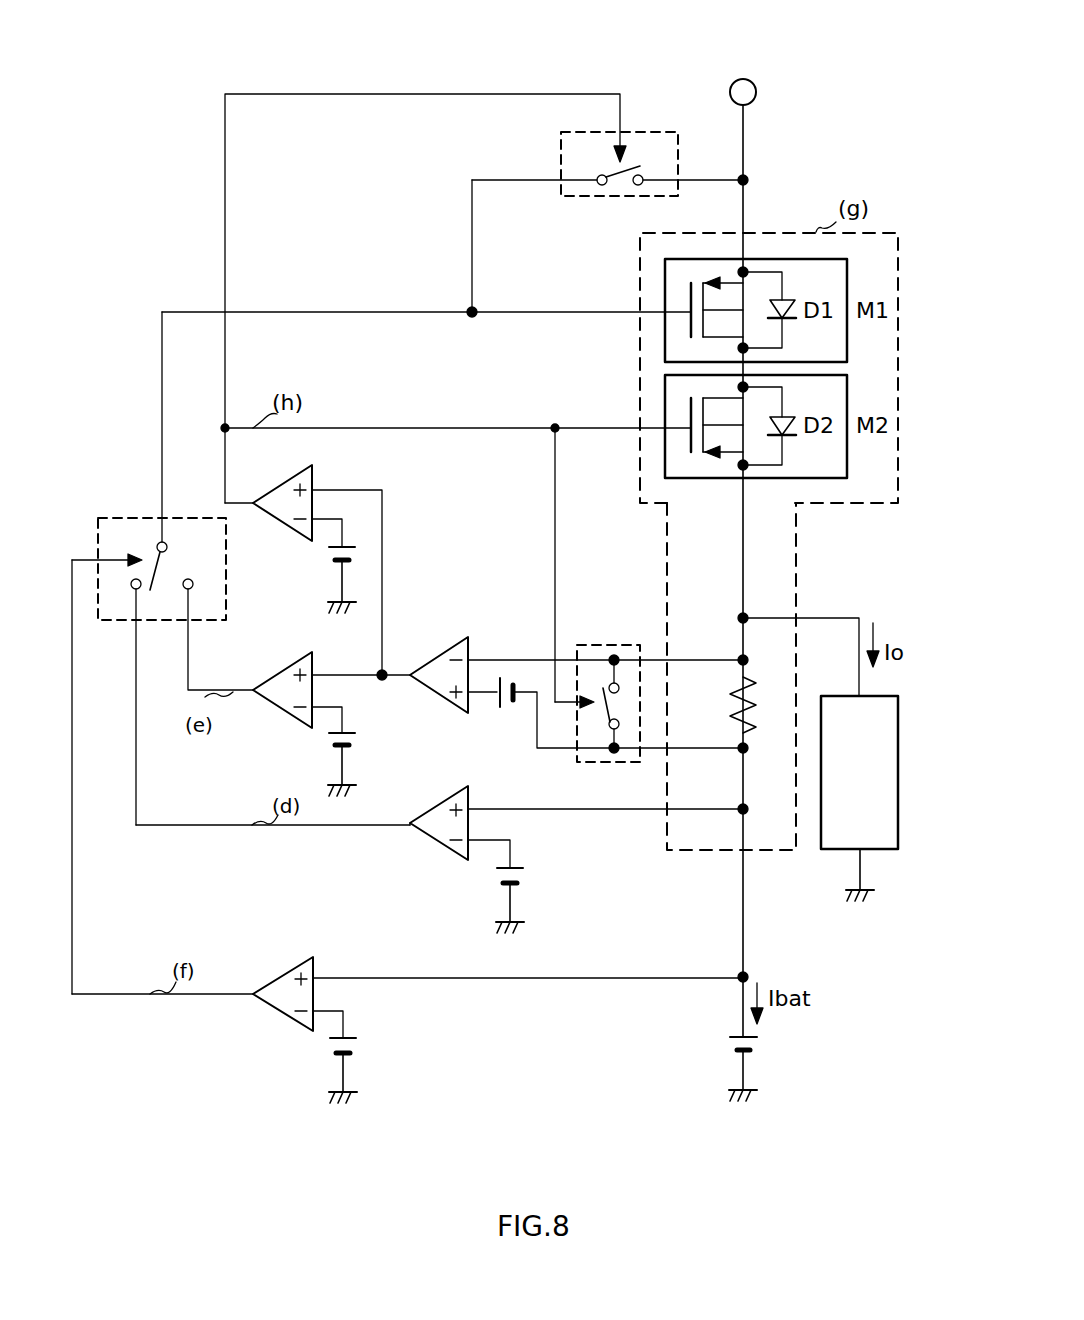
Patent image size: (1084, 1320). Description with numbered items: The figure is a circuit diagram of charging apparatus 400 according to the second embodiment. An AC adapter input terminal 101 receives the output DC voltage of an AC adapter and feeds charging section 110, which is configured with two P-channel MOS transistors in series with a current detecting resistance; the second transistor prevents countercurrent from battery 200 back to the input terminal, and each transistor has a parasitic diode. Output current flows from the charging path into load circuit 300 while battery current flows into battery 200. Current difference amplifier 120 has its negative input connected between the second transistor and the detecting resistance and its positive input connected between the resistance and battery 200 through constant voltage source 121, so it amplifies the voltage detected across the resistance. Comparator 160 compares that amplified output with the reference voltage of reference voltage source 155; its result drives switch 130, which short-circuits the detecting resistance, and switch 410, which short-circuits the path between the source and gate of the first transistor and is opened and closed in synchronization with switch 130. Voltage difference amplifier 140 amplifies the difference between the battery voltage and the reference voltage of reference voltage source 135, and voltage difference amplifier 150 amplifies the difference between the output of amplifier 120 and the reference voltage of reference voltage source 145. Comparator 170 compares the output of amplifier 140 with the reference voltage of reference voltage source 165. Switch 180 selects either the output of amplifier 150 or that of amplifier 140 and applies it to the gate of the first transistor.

The AC adapter input terminal 101 is at (742, 77).
The charging apparatus 400 is at (503, 40).
The switch 410 is at (625, 132).
The charging section 110 is at (796, 550).
The load circuit 300 is at (850, 696).
The battery 200 is at (732, 1038).
The switch 180 is at (136, 518).
The comparator 160 is at (284, 494).
The reference voltage source 155 is at (330, 550).
The voltage difference amplifier 150 is at (284, 681).
The reference voltage source 145 is at (354, 733).
The current difference amplifier 120 is at (470, 652).
The constant voltage source 121 is at (506, 710).
The switch 130 is at (624, 634).
The voltage difference amplifier 140 is at (468, 797).
The reference voltage source 135 is at (523, 867).
The comparator 170 is at (286, 974).
The reference voltage source 165 is at (353, 1039).